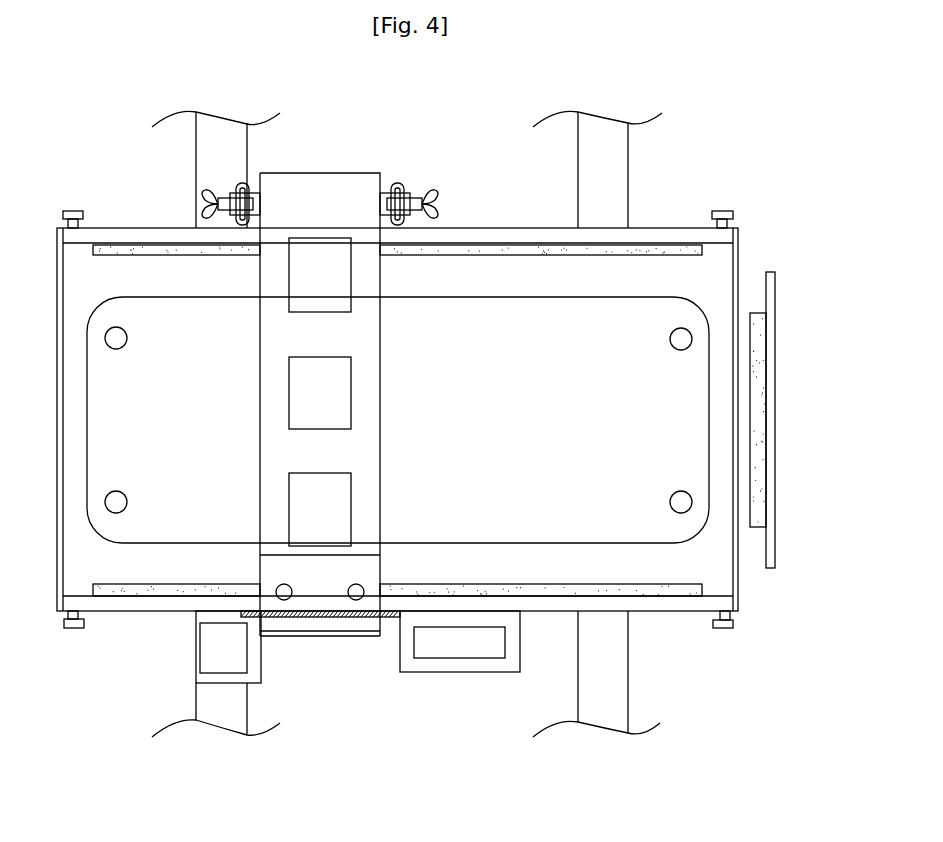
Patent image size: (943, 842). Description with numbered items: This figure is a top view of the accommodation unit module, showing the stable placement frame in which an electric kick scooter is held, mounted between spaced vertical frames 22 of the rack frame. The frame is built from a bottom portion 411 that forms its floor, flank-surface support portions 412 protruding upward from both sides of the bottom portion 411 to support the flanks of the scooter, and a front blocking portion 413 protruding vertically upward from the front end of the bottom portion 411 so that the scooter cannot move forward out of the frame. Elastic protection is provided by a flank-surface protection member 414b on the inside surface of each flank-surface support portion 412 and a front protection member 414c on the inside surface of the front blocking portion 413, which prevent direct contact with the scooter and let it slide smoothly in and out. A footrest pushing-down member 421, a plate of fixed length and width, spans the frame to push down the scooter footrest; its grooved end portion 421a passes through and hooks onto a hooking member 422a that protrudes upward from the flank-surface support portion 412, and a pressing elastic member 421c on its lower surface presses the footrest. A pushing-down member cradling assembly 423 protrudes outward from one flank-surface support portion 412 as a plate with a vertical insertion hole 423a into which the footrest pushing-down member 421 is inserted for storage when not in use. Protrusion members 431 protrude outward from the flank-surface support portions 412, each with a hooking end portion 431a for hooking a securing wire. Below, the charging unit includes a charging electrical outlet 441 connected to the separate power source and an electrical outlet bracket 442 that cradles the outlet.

The vertical frame 22 is at (202, 702).
The bottom portion 411 is at (133, 287).
The flank-surface support portion 412 is at (487, 228).
The front blocking portion 413 is at (770, 297).
The flank-surface protection member 414b is at (647, 250).
The front protection member 414c is at (757, 417).
The footrest pushing-down member 421 is at (381, 420).
The grooved end portion 421a is at (335, 623).
The pressing elastic member 421c is at (230, 172).
The hooking member 422a is at (295, 620).
The pushing-down member cradling assembly 423 is at (500, 673).
The insertion hole 423a is at (470, 627).
The protrusion member 431 is at (732, 225).
The hooking end portion 431a is at (723, 210).
The charging electrical outlet 441 is at (213, 648).
The electrical outlet bracket 442 is at (255, 678).